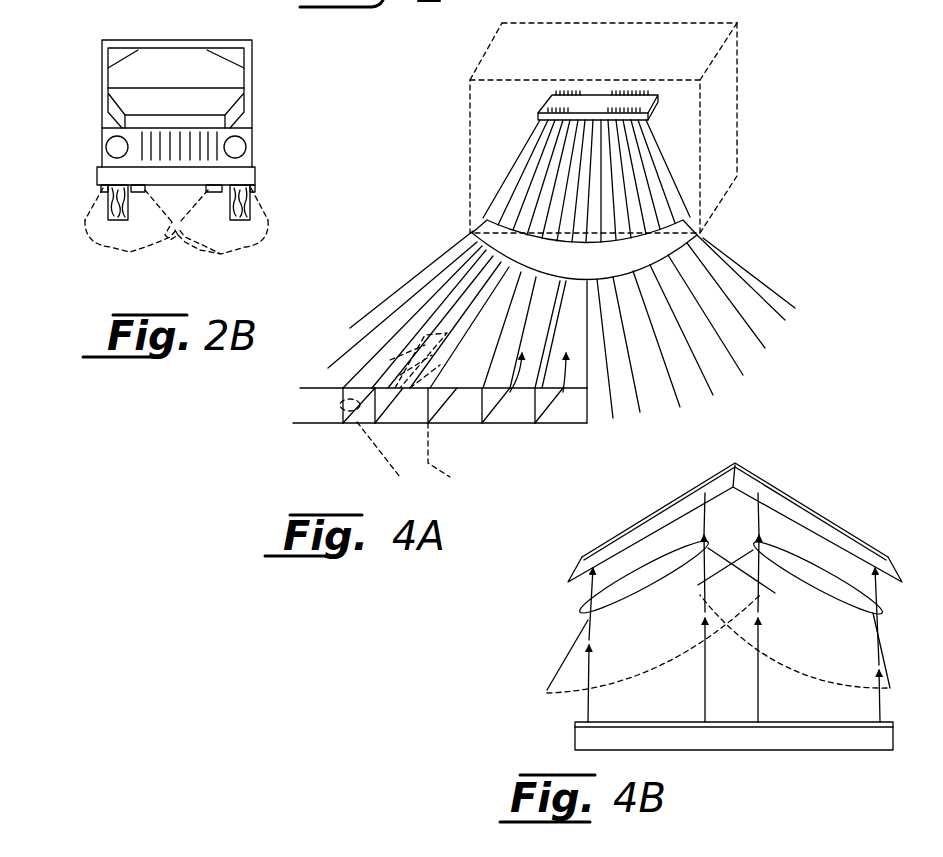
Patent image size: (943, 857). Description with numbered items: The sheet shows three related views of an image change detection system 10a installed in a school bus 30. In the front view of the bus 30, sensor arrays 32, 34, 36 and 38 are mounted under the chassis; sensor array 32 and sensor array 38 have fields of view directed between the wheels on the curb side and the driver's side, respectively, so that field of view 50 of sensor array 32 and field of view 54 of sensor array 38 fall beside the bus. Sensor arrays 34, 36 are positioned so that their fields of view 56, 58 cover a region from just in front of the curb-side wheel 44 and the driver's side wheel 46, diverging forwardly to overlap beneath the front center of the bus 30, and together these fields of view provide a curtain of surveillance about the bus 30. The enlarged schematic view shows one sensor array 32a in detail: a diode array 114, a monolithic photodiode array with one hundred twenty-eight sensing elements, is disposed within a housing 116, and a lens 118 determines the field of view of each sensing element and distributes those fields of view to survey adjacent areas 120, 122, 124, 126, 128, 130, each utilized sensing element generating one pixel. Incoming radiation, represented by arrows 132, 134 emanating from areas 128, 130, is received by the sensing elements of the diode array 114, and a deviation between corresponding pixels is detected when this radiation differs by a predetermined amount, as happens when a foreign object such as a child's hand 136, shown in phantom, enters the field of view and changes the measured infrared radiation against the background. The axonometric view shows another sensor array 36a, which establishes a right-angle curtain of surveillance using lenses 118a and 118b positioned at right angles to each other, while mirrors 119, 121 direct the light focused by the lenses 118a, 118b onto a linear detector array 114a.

In FIG. 2B, the image change detection system 10a is at (263, 92).
In FIG. 2B, the school bus 30 is at (101, 68).
In FIG. 2B, the sensor array 32 is at (102, 187).
In FIG. 2B, the sensor array 34 is at (136, 186).
In FIG. 2B, the sensor array 36 is at (219, 186).
In FIG. 2B, the sensor array 38 is at (250, 187).
In FIG. 2B, the curb-side wheel 44 is at (117, 187).
In FIG. 2B, the driver's side wheel 46 is at (237, 187).
In FIG. 2B, the field of view 50 is at (98, 203).
In FIG. 2B, the field of view 54 is at (263, 205).
In FIG. 2B, the field of view 56 is at (130, 252).
In FIG. 2B, the field of view 58 is at (221, 254).
In FIG. 4A, the sensor array 32a is at (721, 17).
In FIG. 4A, the diode array 114 is at (655, 104).
In FIG. 4A, the housing 116 is at (740, 117).
In FIG. 4A, the lens 118 is at (701, 232).
In FIG. 4A, the area 120 is at (308, 408).
In FIG. 4A, the area 122 is at (358, 418).
In FIG. 4A, the area 124 is at (400, 410).
In FIG. 4A, the area 126 is at (453, 412).
In FIG. 4A, the area 128 is at (503, 418).
In FIG. 4A, the area 130 is at (563, 418).
In FIG. 4A, the arrow 132 is at (520, 415).
In FIG. 4A, the arrow 134 is at (583, 425).
In FIG. 4A, the hand 136 is at (412, 410).
In FIG. 4B, the sensor array 36a is at (765, 473).
In FIG. 4B, the mirror 119 is at (658, 508).
In FIG. 4B, the mirror 121 is at (872, 494).
In FIG. 4B, the lens 118a is at (662, 575).
In FIG. 4B, the lens 118b is at (837, 595).
In FIG. 4B, the linear detector array 114a is at (670, 722).